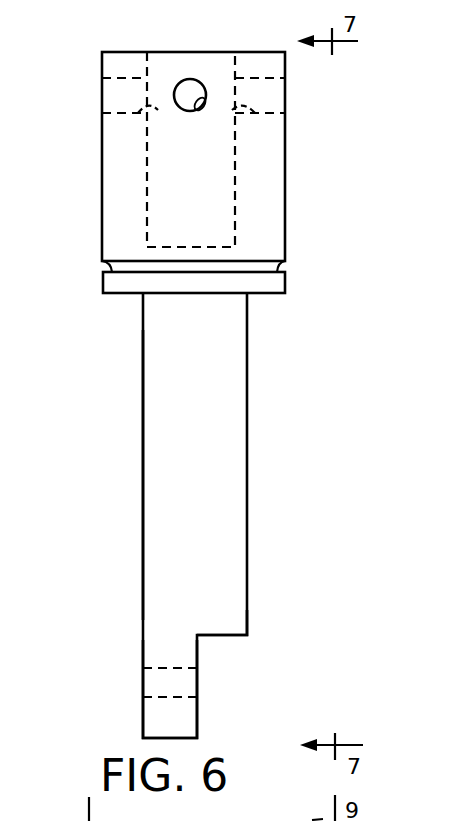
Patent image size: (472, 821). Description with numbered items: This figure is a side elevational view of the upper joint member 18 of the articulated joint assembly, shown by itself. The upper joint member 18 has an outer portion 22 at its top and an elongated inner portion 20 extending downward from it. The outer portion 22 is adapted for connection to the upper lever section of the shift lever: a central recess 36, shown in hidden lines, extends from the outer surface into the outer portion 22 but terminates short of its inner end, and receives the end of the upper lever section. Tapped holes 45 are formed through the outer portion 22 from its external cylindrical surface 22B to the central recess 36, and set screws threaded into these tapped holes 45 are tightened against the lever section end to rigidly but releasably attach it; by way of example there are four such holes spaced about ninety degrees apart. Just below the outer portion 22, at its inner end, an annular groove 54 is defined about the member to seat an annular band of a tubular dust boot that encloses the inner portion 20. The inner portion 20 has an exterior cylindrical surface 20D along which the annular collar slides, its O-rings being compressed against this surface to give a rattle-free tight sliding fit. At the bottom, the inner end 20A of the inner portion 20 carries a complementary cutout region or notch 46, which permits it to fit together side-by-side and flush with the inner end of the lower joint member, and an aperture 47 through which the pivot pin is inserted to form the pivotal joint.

The upper joint member 18 is at (66, 201).
The inner portion 20 is at (148, 433).
The inner end 20A is at (152, 638).
The exterior cylindrical surface 20D is at (142, 477).
The outer portion 22 is at (96, 245).
The external cylindrical surface 22B is at (102, 142).
The central recess 36 is at (147, 175).
The tapped hole 45 is at (223, 109).
The notch 46 is at (227, 640).
The aperture 47 is at (181, 696).
The annular groove 54 is at (206, 272).